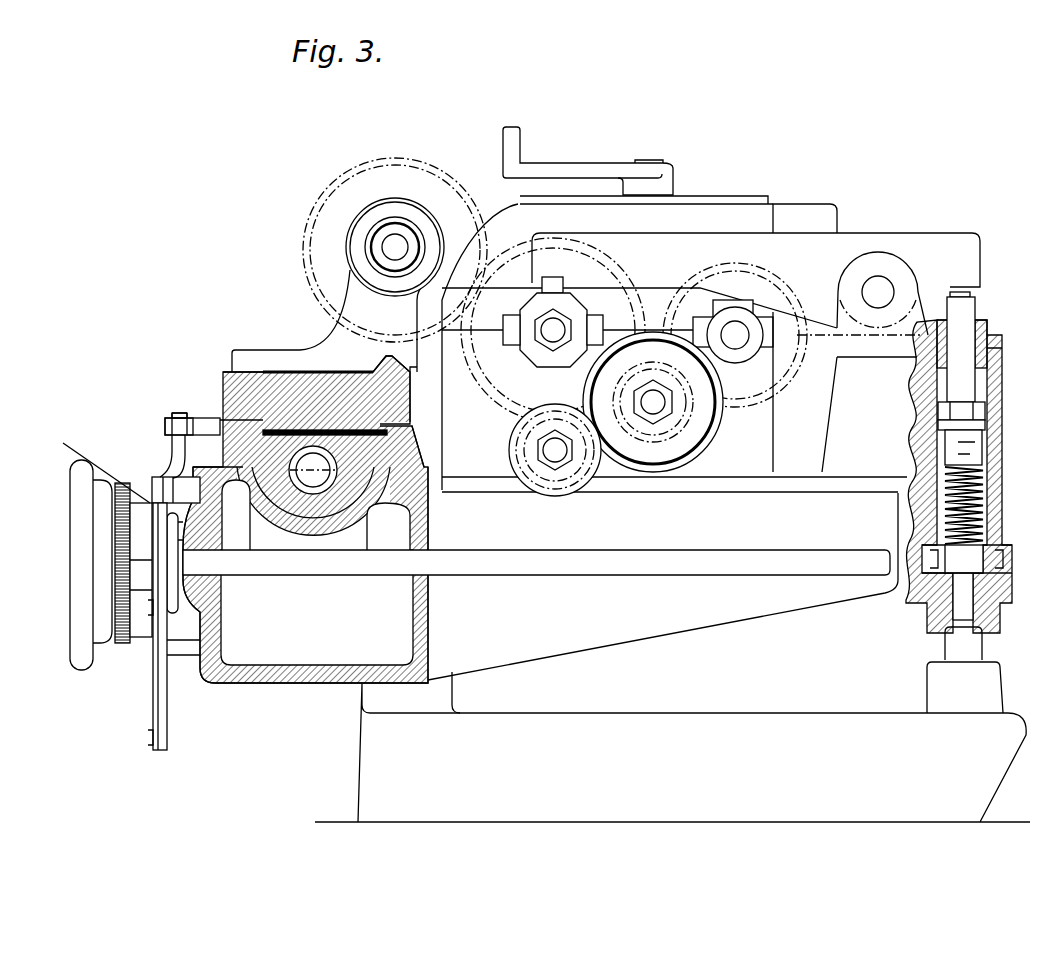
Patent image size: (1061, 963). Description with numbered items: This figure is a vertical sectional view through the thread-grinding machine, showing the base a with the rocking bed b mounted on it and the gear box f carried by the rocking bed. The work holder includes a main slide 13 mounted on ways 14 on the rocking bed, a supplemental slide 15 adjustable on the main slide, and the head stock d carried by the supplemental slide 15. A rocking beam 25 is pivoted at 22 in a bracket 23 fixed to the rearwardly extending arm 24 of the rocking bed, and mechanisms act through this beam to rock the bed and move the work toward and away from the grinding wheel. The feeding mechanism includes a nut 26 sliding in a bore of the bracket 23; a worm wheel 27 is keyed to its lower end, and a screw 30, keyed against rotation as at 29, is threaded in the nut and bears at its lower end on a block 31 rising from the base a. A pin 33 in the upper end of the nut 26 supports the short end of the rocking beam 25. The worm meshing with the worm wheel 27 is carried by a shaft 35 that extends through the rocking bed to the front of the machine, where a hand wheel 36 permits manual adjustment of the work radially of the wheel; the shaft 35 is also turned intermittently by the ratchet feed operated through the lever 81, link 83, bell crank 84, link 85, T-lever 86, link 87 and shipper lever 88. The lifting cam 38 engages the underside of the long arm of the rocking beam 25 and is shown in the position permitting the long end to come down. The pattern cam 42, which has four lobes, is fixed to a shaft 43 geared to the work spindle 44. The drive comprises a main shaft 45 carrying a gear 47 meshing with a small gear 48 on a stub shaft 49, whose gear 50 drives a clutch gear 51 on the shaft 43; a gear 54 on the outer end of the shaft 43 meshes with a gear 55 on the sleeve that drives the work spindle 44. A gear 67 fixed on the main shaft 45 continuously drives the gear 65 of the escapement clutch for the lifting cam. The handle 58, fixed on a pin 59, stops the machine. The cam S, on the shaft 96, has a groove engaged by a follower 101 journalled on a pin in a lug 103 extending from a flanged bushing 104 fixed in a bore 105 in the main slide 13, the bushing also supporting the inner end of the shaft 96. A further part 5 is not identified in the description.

The shaft 5 is at (152, 494).
The main slide 13 is at (215, 427).
The ways 14 is at (380, 510).
The supplemental slide 15 is at (228, 385).
The pivot 22 is at (880, 290).
The bracket 23 is at (845, 392).
The rearwardly extending arm 24 is at (810, 600).
The rocking beam 25 is at (711, 344).
The nut 26 is at (975, 488).
The worm wheel 27 is at (990, 555).
The key 29 is at (945, 592).
The screw 30 is at (995, 513).
The block 31 is at (972, 645).
The pin 33 is at (968, 380).
The shaft 35 is at (720, 578).
The hand wheel 36 is at (72, 655).
The lifting cam 38 is at (740, 355).
The pattern cam 42 is at (543, 355).
The shaft 43 is at (548, 332).
The work spindle 44 is at (395, 247).
The main shaft 45 is at (652, 440).
The gear 47 is at (685, 465).
The small gear 48 is at (555, 490).
The stub shaft 49 is at (545, 450).
The gear 50 is at (535, 468).
The clutch gear 51 is at (480, 400).
The gear 54 is at (603, 250).
The gear 55 is at (380, 162).
The handle 58 is at (565, 178).
The pin 59 is at (655, 160).
The gear 65 is at (737, 262).
The gear 67 is at (685, 420).
The lever 81 is at (137, 625).
The link 83 is at (155, 705).
The bell crank 84 is at (172, 727).
The link 85 is at (92, 467).
The T-lever 86 is at (170, 447).
The link 87 is at (165, 425).
The shipper lever 88 is at (178, 415).
The shaft 96 is at (305, 485).
The roller or follower 101 is at (262, 480).
The lug 103 is at (250, 413).
The flanged bushing 104 is at (313, 478).
The bore 105 is at (322, 488).
The base a is at (672, 742).
The rocking bed b is at (305, 575).
The head stock d is at (270, 345).
The gear box f is at (800, 190).
The cam S is at (262, 480).